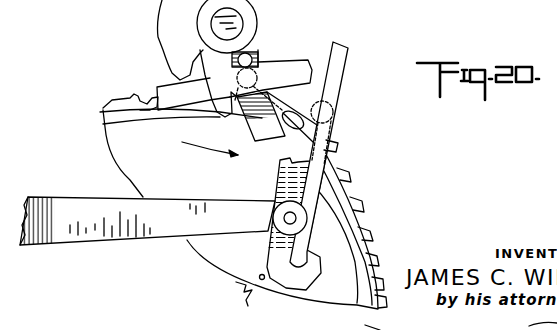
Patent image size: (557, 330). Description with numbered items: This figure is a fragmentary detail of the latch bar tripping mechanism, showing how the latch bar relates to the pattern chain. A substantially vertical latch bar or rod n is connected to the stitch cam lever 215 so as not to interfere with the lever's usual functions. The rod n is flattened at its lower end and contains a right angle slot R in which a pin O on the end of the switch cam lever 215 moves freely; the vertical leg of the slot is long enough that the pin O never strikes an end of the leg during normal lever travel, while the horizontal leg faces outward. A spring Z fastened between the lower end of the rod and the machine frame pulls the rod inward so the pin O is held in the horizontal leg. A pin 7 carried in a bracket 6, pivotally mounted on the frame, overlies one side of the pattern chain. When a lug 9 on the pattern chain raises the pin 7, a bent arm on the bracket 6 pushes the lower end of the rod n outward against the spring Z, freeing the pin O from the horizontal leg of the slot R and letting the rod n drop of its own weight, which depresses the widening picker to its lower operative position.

The bracket 6 is at (284, 96).
The latch bar or rod n is at (340, 65).
The pin 7 is at (325, 104).
The lug 9 is at (327, 140).
The pin O is at (280, 211).
The right angle slot R is at (299, 266).
The stitch cam lever 215 is at (147, 233).
The spring Z is at (250, 281).